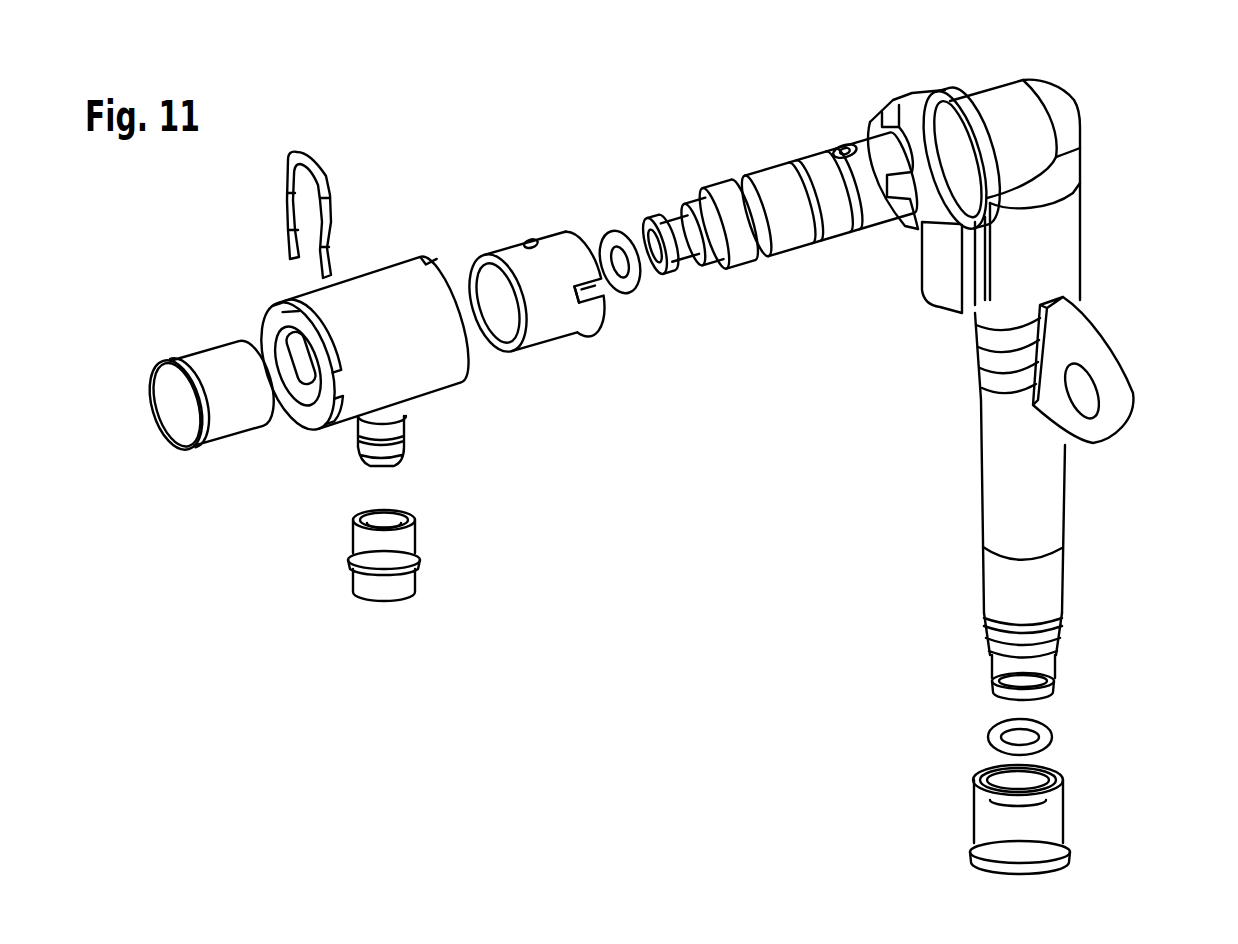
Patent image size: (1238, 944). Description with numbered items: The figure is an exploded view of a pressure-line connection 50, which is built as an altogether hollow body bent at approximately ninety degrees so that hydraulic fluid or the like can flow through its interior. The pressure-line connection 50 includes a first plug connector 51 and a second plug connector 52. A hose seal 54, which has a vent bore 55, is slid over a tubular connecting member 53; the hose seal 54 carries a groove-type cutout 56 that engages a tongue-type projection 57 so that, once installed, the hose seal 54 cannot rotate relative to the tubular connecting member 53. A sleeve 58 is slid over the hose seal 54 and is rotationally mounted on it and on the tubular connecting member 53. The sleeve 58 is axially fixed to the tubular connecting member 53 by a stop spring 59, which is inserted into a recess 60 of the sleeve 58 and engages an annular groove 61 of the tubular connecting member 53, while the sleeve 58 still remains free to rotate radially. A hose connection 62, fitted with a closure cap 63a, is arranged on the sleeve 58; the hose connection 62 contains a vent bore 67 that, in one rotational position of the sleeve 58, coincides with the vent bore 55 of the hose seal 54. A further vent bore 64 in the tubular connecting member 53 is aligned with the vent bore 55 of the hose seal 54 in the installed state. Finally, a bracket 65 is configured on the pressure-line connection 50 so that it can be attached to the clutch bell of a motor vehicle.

The pressure-line connection 50 is at (1063, 477).
The first plug connector 51 is at (1033, 665).
The second plug connector 52 is at (655, 228).
The tubular connecting member 53 is at (797, 168).
The hose seal 54 is at (562, 256).
The vent bore 55 is at (531, 244).
The groove-type cutout 56 is at (586, 292).
The tongue-type projection 57 is at (925, 92).
The sleeve 58 is at (365, 345).
The stop spring 59 is at (306, 159).
The recess 60 is at (303, 297).
The annular groove 61 is at (828, 194).
The hose connection 62 is at (349, 471).
The closure cap 63a is at (392, 585).
The vent bore 64 is at (845, 151).
The bracket 65 is at (1127, 413).
The vent bore 67 is at (380, 472).